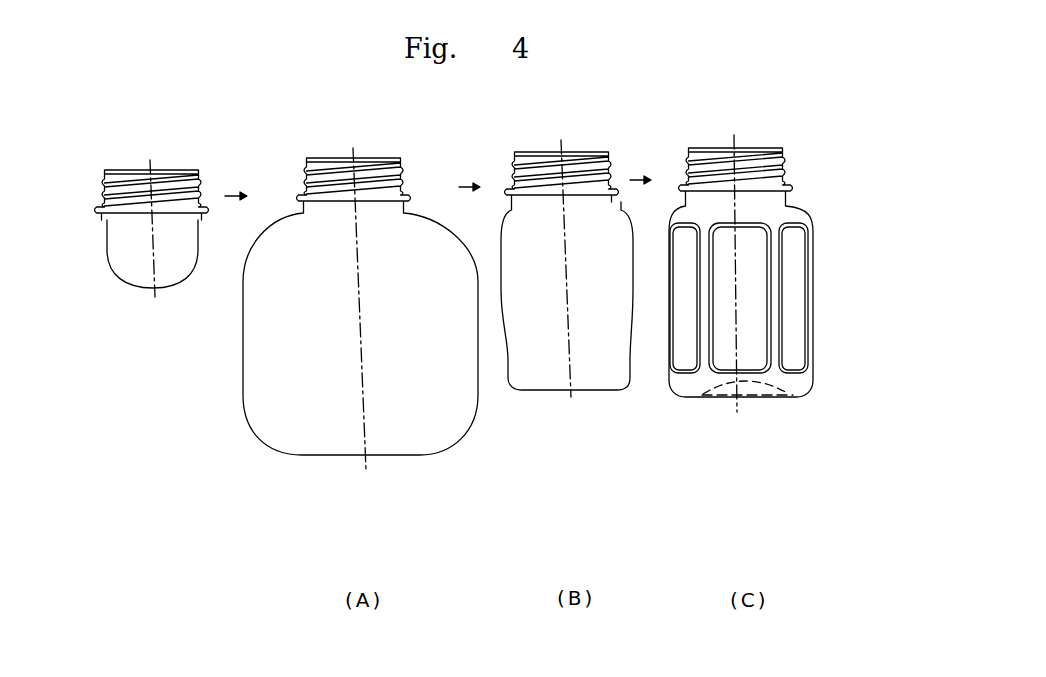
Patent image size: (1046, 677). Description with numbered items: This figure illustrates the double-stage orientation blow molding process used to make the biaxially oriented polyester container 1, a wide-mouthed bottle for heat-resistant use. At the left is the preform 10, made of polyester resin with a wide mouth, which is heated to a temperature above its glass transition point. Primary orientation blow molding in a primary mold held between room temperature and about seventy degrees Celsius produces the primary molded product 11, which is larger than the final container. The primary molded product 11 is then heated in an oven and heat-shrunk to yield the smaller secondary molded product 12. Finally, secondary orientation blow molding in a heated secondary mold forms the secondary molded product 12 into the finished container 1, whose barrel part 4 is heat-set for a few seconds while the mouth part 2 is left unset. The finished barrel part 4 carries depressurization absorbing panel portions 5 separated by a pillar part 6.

The biaxially oriented polyester container 1 is at (794, 245).
The mouth part 2 is at (777, 148).
The barrel part 4 is at (830, 370).
The depressurization absorbing panel portion 5 is at (795, 258).
The pillar part 6 is at (778, 313).
The preform 10 is at (147, 272).
The primary molded product 11 is at (338, 393).
The secondary molded product 12 is at (552, 353).